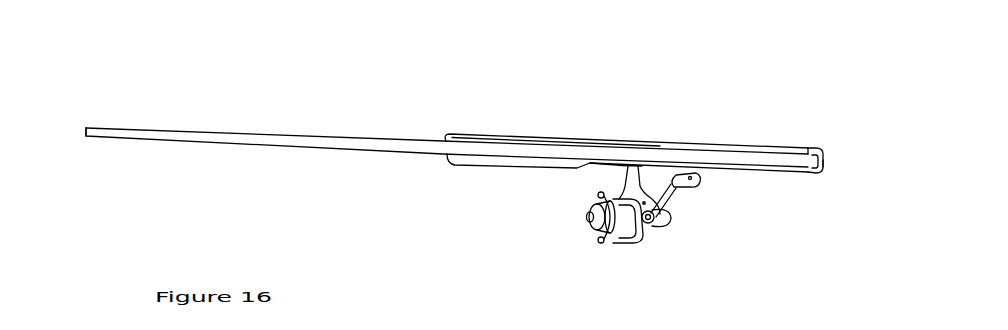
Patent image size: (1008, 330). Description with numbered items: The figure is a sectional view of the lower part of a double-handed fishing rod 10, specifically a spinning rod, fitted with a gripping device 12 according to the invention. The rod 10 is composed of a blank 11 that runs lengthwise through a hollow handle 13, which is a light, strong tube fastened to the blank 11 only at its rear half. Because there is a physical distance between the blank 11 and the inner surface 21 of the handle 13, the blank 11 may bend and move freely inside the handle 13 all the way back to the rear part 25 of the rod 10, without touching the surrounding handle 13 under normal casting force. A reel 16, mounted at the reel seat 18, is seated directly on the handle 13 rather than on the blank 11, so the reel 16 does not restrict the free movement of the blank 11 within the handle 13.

The fishing rod 10 is at (148, 133).
The blank 11 is at (357, 142).
The gripping device 12 is at (717, 147).
The handle 13 is at (533, 138).
The reel 16 is at (645, 228).
The reel seat 18 is at (595, 166).
The inner surface 21 is at (485, 161).
The rear part 25 is at (824, 173).